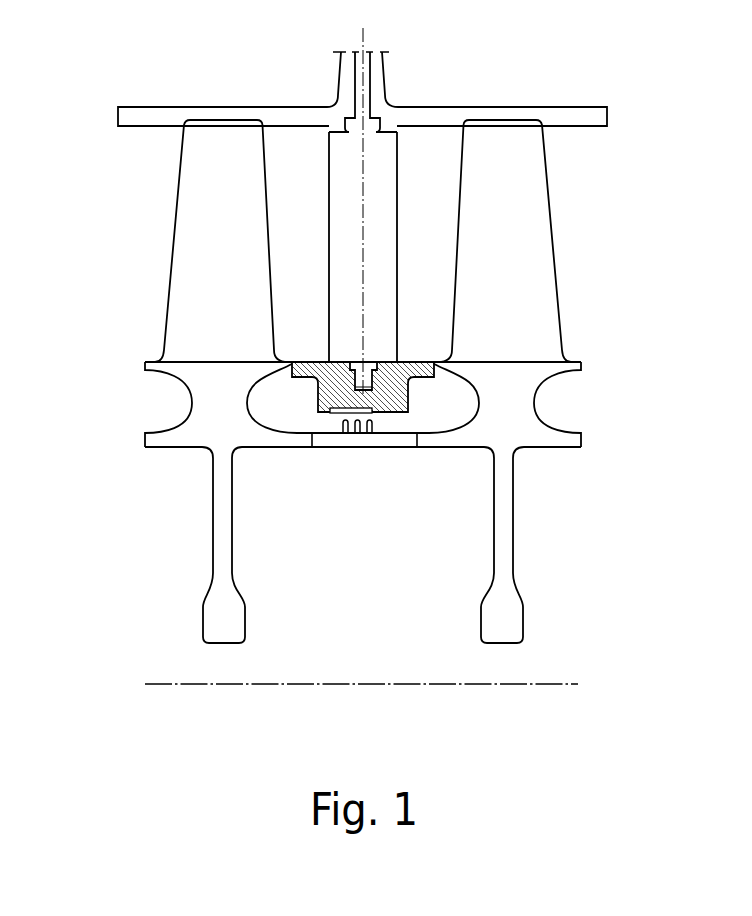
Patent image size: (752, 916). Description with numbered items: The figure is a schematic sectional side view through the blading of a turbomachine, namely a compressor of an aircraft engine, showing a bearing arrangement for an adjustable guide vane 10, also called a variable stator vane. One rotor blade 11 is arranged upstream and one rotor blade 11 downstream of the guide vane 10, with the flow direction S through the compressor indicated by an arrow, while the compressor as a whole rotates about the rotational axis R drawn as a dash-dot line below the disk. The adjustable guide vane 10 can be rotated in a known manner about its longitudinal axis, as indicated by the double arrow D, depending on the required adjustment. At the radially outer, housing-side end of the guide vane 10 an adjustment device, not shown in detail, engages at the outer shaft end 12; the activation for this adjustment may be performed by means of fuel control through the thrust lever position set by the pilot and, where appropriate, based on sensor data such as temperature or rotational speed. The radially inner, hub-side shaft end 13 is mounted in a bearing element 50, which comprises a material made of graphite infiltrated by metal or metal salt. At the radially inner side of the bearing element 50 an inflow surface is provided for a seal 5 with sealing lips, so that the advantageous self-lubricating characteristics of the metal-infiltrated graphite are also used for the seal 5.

The seal 5 is at (338, 447).
The adjustable guide vane 10 is at (383, 270).
The rotor blade 11 is at (197, 197).
The outer shaft end 12 is at (365, 82).
The shaft end 13 is at (370, 390).
The bearing element 50 is at (365, 400).
The double arrow D is at (337, 188).
The flow direction S is at (107, 287).
The rotational axis R is at (500, 684).